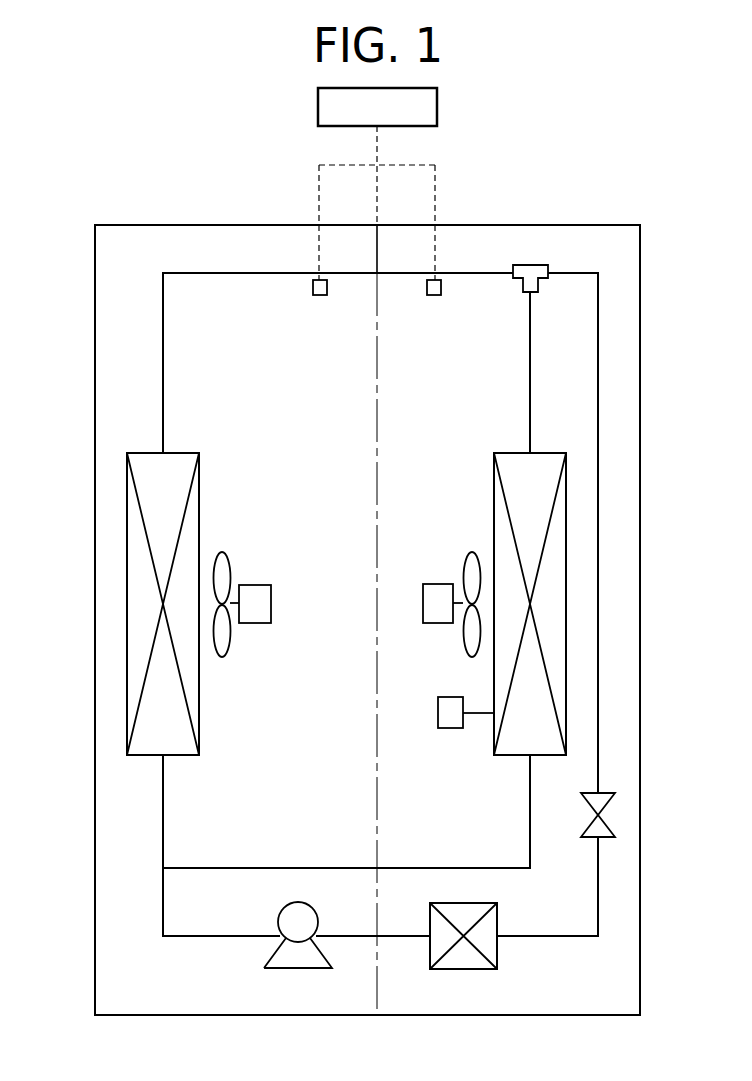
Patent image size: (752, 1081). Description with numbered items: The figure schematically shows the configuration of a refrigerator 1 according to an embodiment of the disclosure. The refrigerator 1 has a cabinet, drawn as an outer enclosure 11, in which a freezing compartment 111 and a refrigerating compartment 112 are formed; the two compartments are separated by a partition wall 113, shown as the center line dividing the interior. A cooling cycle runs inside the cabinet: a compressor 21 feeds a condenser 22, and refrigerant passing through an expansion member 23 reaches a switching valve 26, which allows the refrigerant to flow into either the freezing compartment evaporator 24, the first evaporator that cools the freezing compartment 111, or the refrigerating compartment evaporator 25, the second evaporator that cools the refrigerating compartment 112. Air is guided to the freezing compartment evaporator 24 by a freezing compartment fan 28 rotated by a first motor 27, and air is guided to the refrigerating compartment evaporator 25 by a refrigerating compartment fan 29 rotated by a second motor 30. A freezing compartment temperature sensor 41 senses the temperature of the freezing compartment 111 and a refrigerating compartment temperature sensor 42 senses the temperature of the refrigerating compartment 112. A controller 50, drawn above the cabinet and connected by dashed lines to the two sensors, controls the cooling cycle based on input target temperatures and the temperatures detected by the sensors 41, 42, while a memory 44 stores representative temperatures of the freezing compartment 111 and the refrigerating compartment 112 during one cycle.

The refrigerator 1 is at (622, 186).
The casing 11 is at (641, 410).
The freezing compartment 111 is at (272, 241).
The refrigerating compartment 112 is at (410, 241).
The partition wall 113 is at (377, 327).
The compressor 21 is at (298, 962).
The condenser 22 is at (497, 947).
The expansion member 23 is at (615, 806).
The freezing compartment evaporator 24 is at (126, 612).
The refrigerating compartment evaporator 25 is at (567, 662).
The switching valve 26 is at (530, 265).
The first motor 27 is at (256, 624).
The freezing compartment fan 28 is at (213, 645).
The refrigerating compartment fan 29 is at (474, 577).
The second motor 30 is at (436, 584).
The freezing compartment temperature sensor 41 is at (312, 288).
The refrigerating compartment temperature sensor 42 is at (442, 288).
The memory 44 is at (450, 728).
The controller 50 is at (438, 106).